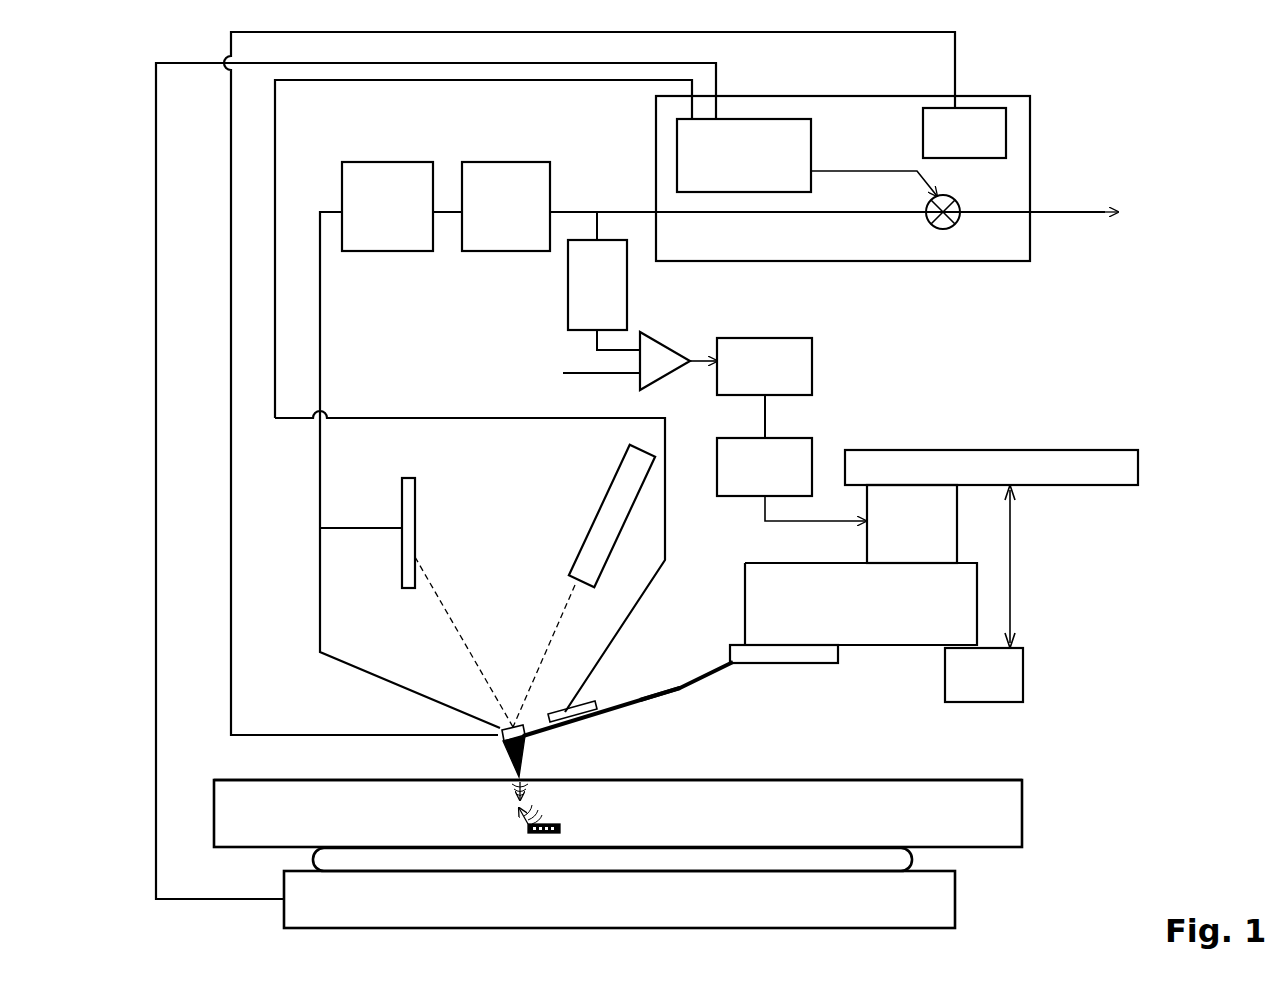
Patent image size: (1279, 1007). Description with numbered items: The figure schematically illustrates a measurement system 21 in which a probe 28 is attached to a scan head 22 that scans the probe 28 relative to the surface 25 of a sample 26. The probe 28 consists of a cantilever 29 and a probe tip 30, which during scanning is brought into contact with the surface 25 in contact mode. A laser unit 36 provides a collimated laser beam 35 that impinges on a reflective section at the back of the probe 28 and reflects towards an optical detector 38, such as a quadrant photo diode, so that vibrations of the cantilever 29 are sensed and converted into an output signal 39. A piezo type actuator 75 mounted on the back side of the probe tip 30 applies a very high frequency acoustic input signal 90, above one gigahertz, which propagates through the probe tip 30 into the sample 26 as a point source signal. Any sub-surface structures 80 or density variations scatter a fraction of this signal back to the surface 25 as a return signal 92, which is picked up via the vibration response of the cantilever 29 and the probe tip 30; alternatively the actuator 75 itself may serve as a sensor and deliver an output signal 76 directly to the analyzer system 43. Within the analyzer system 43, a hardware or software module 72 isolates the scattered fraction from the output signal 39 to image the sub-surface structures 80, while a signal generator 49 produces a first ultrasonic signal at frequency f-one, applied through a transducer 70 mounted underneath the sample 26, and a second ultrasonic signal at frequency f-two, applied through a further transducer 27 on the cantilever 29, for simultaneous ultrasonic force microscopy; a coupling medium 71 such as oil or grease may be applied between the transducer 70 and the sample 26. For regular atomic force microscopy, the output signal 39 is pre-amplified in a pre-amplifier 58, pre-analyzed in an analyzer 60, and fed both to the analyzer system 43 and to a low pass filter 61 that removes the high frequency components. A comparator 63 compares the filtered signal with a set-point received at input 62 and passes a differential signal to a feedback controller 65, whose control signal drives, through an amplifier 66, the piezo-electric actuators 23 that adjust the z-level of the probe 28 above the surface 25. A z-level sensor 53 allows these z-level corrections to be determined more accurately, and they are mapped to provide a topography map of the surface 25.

The measurement system 21 is at (1138, 697).
The scan head 22 is at (885, 645).
The piezo-electric actuators 23 is at (866, 543).
The surface 25 is at (938, 780).
The sample 26 is at (1022, 822).
The transducer 27 is at (600, 707).
The probe 28 is at (705, 680).
The cantilever 29 is at (650, 697).
The probe tip 30 is at (527, 753).
The laser beam 35 is at (463, 637).
The laser unit 36 is at (580, 545).
The optical detector 38 is at (415, 485).
The output signal 39 is at (367, 528).
The analyzer system 43 is at (973, 261).
The signal generator 49 is at (763, 119).
The z-level sensor 53 is at (1023, 668).
The pre-amplifier 58 is at (370, 162).
The analyzer 60 is at (488, 162).
The low pass filter 61 is at (568, 310).
The input 62 is at (575, 375).
The comparator 63 is at (667, 343).
The feedback controller 65 is at (812, 368).
The amplifier 66 is at (803, 432).
The transducer 70 is at (955, 898).
The coupling medium 71 is at (912, 858).
The module 72 is at (1006, 132).
The piezo type actuator 75 is at (552, 713).
The output signal 76 is at (353, 665).
The sub-surface structures 80 is at (562, 828).
The acoustic input signal 90 is at (530, 786).
The return signal 92 is at (520, 830).